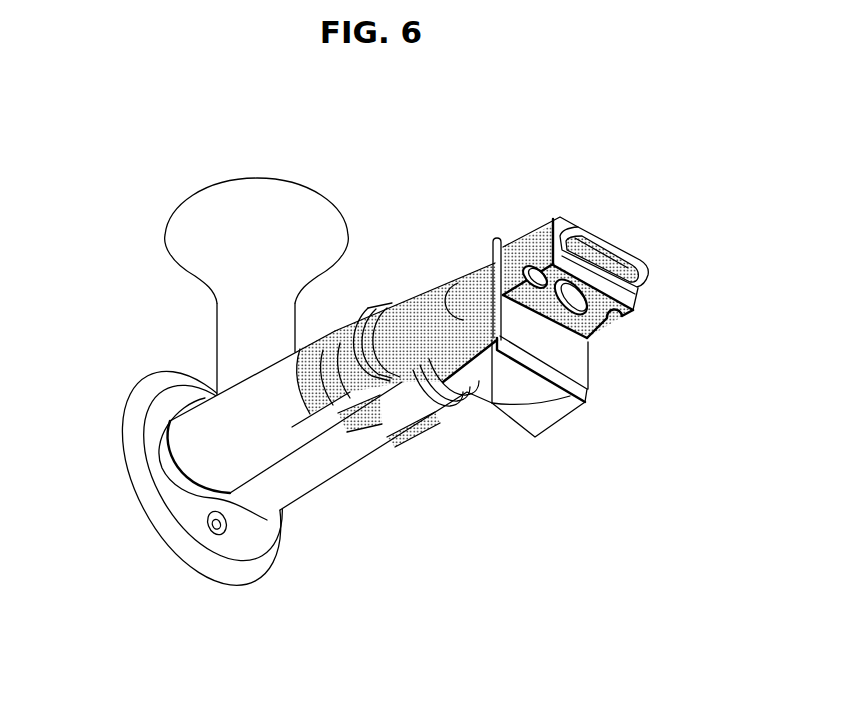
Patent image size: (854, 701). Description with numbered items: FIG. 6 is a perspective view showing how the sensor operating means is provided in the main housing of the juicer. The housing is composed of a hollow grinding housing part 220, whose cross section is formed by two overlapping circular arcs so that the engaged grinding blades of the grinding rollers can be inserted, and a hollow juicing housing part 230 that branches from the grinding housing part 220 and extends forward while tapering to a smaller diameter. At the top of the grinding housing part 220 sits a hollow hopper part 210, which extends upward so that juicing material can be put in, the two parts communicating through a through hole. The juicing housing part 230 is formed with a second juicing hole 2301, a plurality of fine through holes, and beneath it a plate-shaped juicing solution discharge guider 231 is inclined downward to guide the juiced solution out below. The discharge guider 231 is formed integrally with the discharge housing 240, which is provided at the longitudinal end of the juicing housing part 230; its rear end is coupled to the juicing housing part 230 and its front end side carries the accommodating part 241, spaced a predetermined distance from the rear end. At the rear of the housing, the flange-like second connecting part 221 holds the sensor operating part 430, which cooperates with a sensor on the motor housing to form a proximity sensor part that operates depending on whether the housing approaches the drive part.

The hopper part 210 is at (257, 178).
The grinding housing part 220 is at (330, 481).
The second connecting part 221 is at (128, 482).
The juicing housing part 230 is at (472, 262).
The second juicing hole 2301 is at (410, 316).
The discharge housing 240 is at (531, 229).
The accommodating part 241 is at (650, 270).
The juicing solution discharge guider 231 is at (524, 418).
The sensor operating part 430 is at (217, 532).